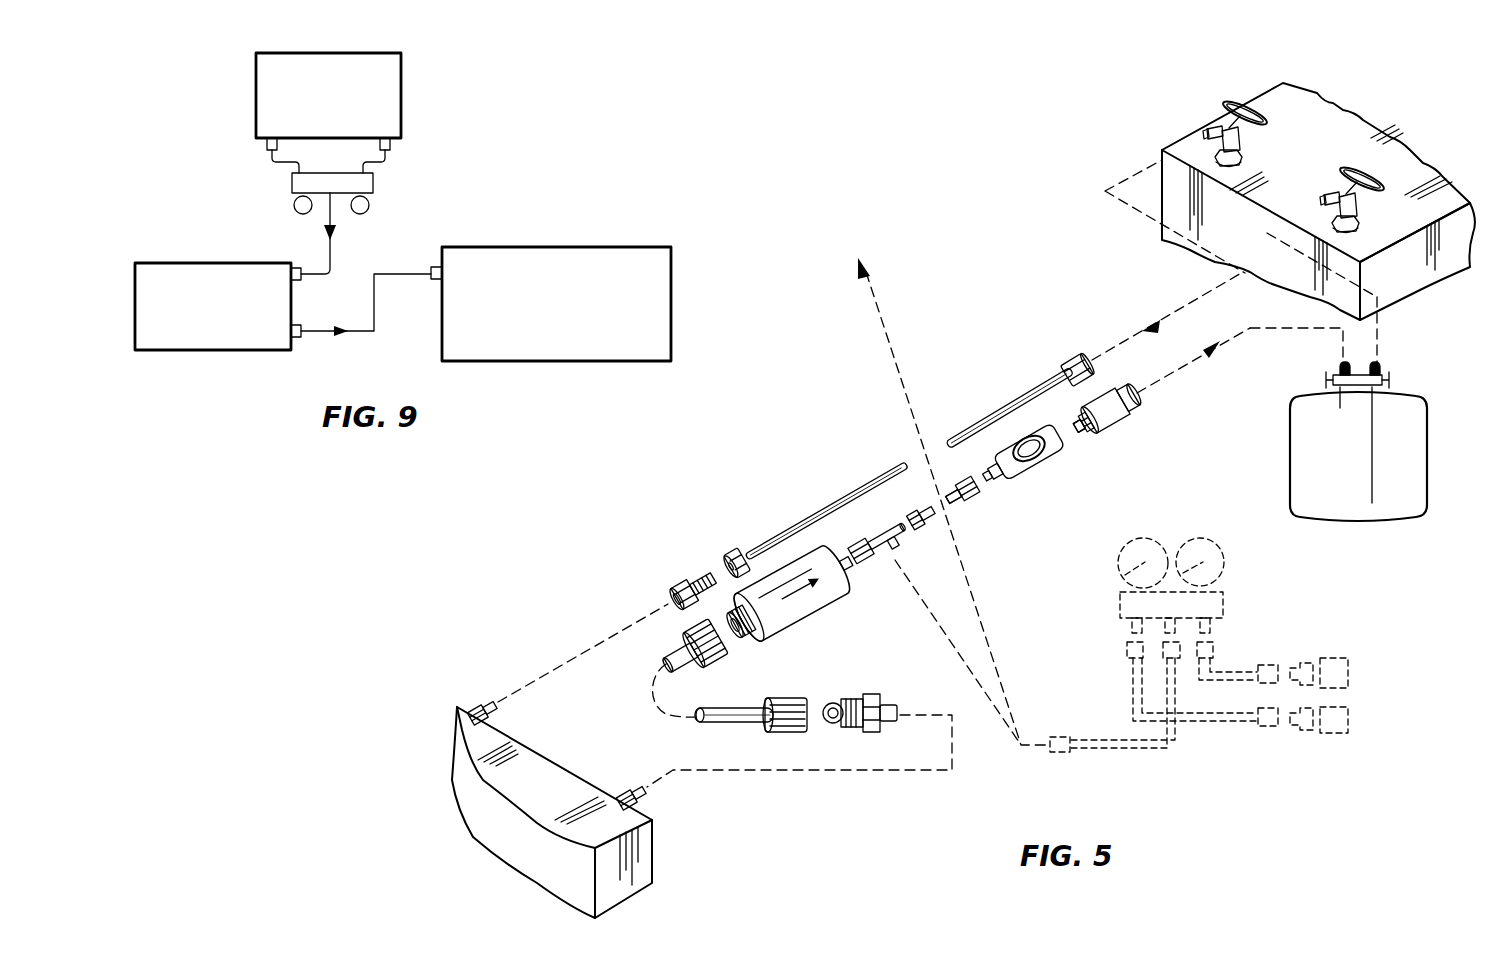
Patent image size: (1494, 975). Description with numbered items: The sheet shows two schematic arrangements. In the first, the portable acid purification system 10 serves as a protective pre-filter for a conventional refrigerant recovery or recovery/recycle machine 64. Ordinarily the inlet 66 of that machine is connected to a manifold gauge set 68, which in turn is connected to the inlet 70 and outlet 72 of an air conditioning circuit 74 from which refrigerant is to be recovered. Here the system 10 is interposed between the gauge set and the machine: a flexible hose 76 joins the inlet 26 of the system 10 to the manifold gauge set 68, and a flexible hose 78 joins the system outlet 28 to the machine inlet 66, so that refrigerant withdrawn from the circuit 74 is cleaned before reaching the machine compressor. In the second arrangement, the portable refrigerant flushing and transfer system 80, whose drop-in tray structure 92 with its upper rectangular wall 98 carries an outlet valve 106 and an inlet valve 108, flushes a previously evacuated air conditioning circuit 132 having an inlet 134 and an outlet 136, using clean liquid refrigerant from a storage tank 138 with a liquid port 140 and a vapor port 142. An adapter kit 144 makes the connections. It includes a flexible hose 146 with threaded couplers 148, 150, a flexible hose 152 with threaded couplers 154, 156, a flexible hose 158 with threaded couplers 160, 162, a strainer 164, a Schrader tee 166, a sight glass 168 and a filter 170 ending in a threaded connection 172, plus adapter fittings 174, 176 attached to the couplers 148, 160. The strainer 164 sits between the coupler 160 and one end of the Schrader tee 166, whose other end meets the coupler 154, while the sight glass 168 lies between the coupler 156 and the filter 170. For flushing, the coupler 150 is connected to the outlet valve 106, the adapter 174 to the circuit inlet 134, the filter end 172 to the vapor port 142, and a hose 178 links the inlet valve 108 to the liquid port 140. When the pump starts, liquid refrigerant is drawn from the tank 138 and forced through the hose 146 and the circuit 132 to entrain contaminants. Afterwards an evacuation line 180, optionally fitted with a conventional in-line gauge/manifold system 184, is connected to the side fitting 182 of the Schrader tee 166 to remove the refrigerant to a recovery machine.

In FIG. 9, the portable acid purification system 10 is at (253, 257).
In FIG. 9, the inlet 26 is at (301, 278).
In FIG. 9, the outlet 28 is at (301, 335).
In FIG. 9, the conventional refrigerant recovery or recovery/recycle machine 64 is at (582, 247).
In FIG. 9, the inlet 66 is at (436, 267).
In FIG. 9, the manifold gauge set 68 is at (373, 186).
In FIG. 9, the inlet 70 is at (267, 144).
In FIG. 9, the outlet 72 is at (390, 144).
In FIG. 9, the air conditioning circuit 74 is at (402, 82).
In FIG. 9, the flexible hose 76 is at (330, 268).
In FIG. 9, the flexible hose 78 is at (374, 316).
In FIG. 5, the portable refrigerant flushing and transfer system 80 is at (1290, 201).
In FIG. 5, the drop-in tray structure 92 is at (1409, 268).
In FIG. 5, the upper rectangular wall 98 is at (1320, 167).
In FIG. 5, the outlet valve 106 is at (1262, 121).
In FIG. 5, the inlet valve 108 is at (1360, 177).
In FIG. 5, the air conditioning circuit 132 is at (560, 757).
In FIG. 5, the inlet 134 is at (478, 703).
In FIG. 5, the outlet 136 is at (626, 788).
In FIG. 5, the storage tank 138 is at (1288, 450).
In FIG. 5, the liquid port 140 is at (1382, 367).
In FIG. 5, the vapor port 142 is at (1340, 367).
In FIG. 5, the adapter kit 144 is at (994, 390).
In FIG. 5, the flexible hose 146 is at (836, 498).
In FIG. 5, the threaded coupler 148 is at (733, 552).
In FIG. 5, the threaded coupler 150 is at (1072, 360).
In FIG. 5, the flexible hose 152 is at (962, 495).
In FIG. 5, the threaded coupler 154 is at (915, 510).
In FIG. 5, the threaded coupler 156 is at (965, 480).
In FIG. 5, the flexible hose 158 is at (722, 723).
In FIG. 5, the threaded coupler 160 is at (722, 657).
In FIG. 5, the threaded coupler 162 is at (777, 698).
In FIG. 5, the strainer 164 is at (788, 630).
In FIG. 5, the Schrader tee 166 is at (878, 538).
In FIG. 5, the sight glass 168 is at (1050, 458).
In FIG. 5, the filter 170 is at (1121, 420).
In FIG. 5, the threaded connection 172 is at (1120, 390).
In FIG. 5, the adapter fitting 174 is at (678, 584).
In FIG. 5, the adapter fitting 176 is at (876, 694).
In FIG. 5, the hose 178 is at (1377, 337).
In FIG. 5, the evacuation line 180 is at (975, 590).
In FIG. 5, the side fitting 182 is at (888, 561).
In FIG. 5, the in-line gauge/manifold system 184 is at (1186, 726).